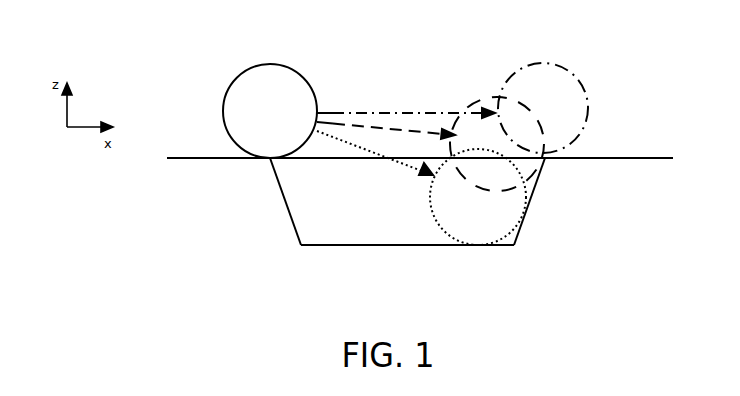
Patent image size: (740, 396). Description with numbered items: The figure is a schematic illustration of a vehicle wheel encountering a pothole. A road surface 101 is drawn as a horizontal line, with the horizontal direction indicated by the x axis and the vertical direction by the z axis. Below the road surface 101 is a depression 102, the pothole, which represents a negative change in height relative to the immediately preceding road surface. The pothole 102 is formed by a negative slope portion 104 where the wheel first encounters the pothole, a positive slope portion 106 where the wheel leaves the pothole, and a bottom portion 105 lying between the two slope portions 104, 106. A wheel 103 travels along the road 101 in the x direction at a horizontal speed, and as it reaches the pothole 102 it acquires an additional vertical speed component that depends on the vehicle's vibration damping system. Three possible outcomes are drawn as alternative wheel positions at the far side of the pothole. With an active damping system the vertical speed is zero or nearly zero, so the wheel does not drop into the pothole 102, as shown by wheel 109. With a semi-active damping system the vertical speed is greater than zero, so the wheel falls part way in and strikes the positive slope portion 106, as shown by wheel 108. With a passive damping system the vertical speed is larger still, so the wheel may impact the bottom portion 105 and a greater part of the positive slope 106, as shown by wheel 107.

The road surface 101 is at (396, 189).
The depression 102 is at (406, 97).
The wheel 103 is at (246, 95).
The negative slope portion 104 is at (260, 210).
The bottom portion 105 is at (407, 274).
The positive slope portion 106 is at (561, 207).
The wheel 107 is at (432, 197).
The wheel 108 is at (486, 113).
The wheel 109 is at (572, 90).